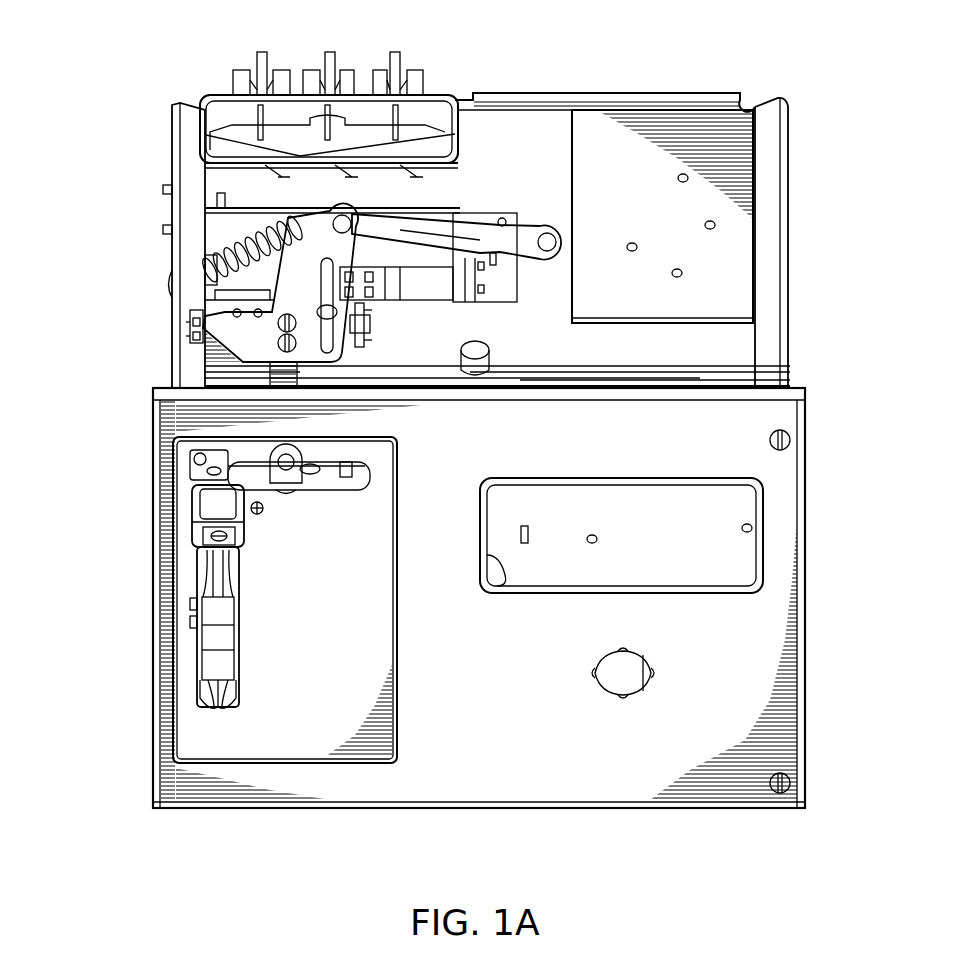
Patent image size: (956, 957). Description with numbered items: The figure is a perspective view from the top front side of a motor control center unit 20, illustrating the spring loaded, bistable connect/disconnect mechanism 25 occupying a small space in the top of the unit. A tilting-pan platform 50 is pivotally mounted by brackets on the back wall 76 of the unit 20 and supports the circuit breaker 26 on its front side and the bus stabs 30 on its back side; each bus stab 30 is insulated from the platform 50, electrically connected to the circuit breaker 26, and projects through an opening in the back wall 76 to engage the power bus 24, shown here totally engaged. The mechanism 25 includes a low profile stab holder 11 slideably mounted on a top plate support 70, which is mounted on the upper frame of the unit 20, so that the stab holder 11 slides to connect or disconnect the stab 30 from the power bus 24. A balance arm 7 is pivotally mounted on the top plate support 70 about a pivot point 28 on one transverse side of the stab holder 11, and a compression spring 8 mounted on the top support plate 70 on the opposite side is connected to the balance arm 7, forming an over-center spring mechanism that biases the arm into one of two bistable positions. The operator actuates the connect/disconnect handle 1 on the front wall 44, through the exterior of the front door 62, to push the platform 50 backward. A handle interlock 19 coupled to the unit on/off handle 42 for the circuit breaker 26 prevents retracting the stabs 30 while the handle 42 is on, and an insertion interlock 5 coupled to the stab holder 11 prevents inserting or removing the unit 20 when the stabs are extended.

The connect/disconnect handle 1 is at (190, 468).
The insertion interlock 5 is at (372, 325).
The balance arm 7 is at (477, 243).
The compression spring 8 is at (210, 240).
The stab holder 11 is at (256, 158).
The handle interlock 19 is at (195, 325).
The motor control center unit 20 is at (138, 688).
The power bus 24 is at (257, 52).
The connect/disconnect mechanism 25 is at (128, 292).
The circuit breaker 26 is at (428, 263).
The pivot point 28 is at (548, 245).
The bus stab 30 is at (418, 78).
The unit on/off handle 42 is at (195, 516).
The front wall 44 is at (273, 735).
The tilting-pan platform 50 is at (250, 135).
The front door 62 is at (705, 740).
The top plate support 70 is at (733, 352).
The back wall 76 is at (697, 130).